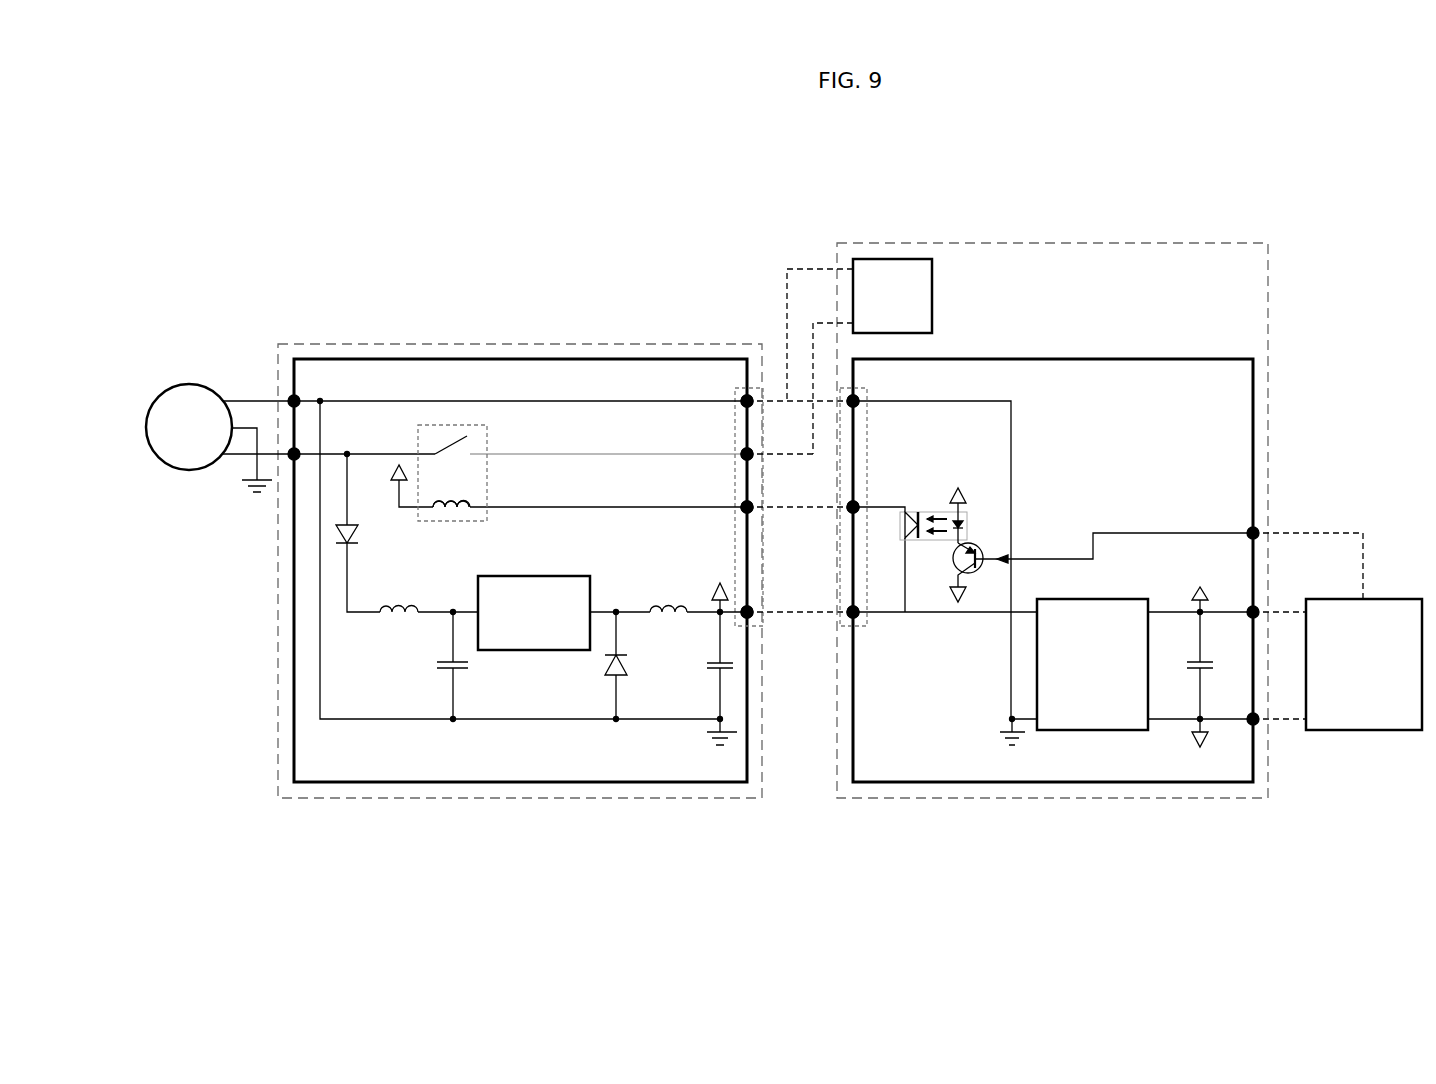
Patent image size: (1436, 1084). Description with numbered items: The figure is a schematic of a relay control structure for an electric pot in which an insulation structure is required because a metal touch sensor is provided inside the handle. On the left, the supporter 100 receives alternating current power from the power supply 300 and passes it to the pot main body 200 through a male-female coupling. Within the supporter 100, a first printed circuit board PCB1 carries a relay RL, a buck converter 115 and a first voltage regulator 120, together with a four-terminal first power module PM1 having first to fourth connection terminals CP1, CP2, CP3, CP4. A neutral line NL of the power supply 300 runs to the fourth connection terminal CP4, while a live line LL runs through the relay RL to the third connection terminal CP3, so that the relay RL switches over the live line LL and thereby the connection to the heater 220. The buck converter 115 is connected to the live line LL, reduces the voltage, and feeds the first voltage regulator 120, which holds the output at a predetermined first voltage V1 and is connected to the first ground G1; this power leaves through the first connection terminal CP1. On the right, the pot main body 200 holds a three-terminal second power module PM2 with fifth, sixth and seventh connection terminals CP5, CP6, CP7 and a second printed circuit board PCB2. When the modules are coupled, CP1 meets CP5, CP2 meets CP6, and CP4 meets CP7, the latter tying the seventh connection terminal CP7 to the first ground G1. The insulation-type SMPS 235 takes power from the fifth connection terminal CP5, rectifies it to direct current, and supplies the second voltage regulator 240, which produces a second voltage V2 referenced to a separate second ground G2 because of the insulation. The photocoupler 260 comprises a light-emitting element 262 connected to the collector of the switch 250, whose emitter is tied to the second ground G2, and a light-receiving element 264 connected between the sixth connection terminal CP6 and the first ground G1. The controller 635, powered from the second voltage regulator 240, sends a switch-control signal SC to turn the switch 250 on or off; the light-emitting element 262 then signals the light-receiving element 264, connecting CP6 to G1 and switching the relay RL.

The supporter 100 is at (520, 344).
The first printed circuit board PCB1 is at (659, 359).
The first power module PM1 is at (754, 388).
The power supply 300 is at (187, 383).
The neutral line NL is at (632, 401).
The live line LL is at (632, 454).
The relay RL is at (453, 523).
The first voltage V1 is at (550, 536).
The buck converter 115 is at (535, 576).
The first voltage regulator 120 is at (720, 700).
The first ground G1 is at (866, 745).
The first connection terminal CP1 is at (753, 609).
The second connection terminal CP2 is at (753, 511).
The third connection terminal CP3 is at (753, 458).
The fourth connection terminal CP4 is at (753, 406).
The fifth connection terminal CP5 is at (858, 617).
The sixth connection terminal CP6 is at (858, 503).
The seventh connection terminal CP7 is at (858, 405).
The pot main body 200 is at (1037, 243).
The second printed circuit board PCB2 is at (1197, 359).
The second power module PM2 is at (867, 393).
The heater 220 is at (935, 297).
The photocoupler 260 is at (1020, 488).
The light-receiving element 264 is at (918, 511).
The light-emitting element 262 is at (960, 525).
The second voltage V2 is at (1080, 537).
The switch 250 is at (983, 550).
The second ground G2 is at (1067, 680).
The insulation-type SMPS 235 is at (1093, 733).
The second voltage regulator 240 is at (1202, 712).
The switch-control signal SC is at (1305, 617).
The controller 635 is at (1364, 735).